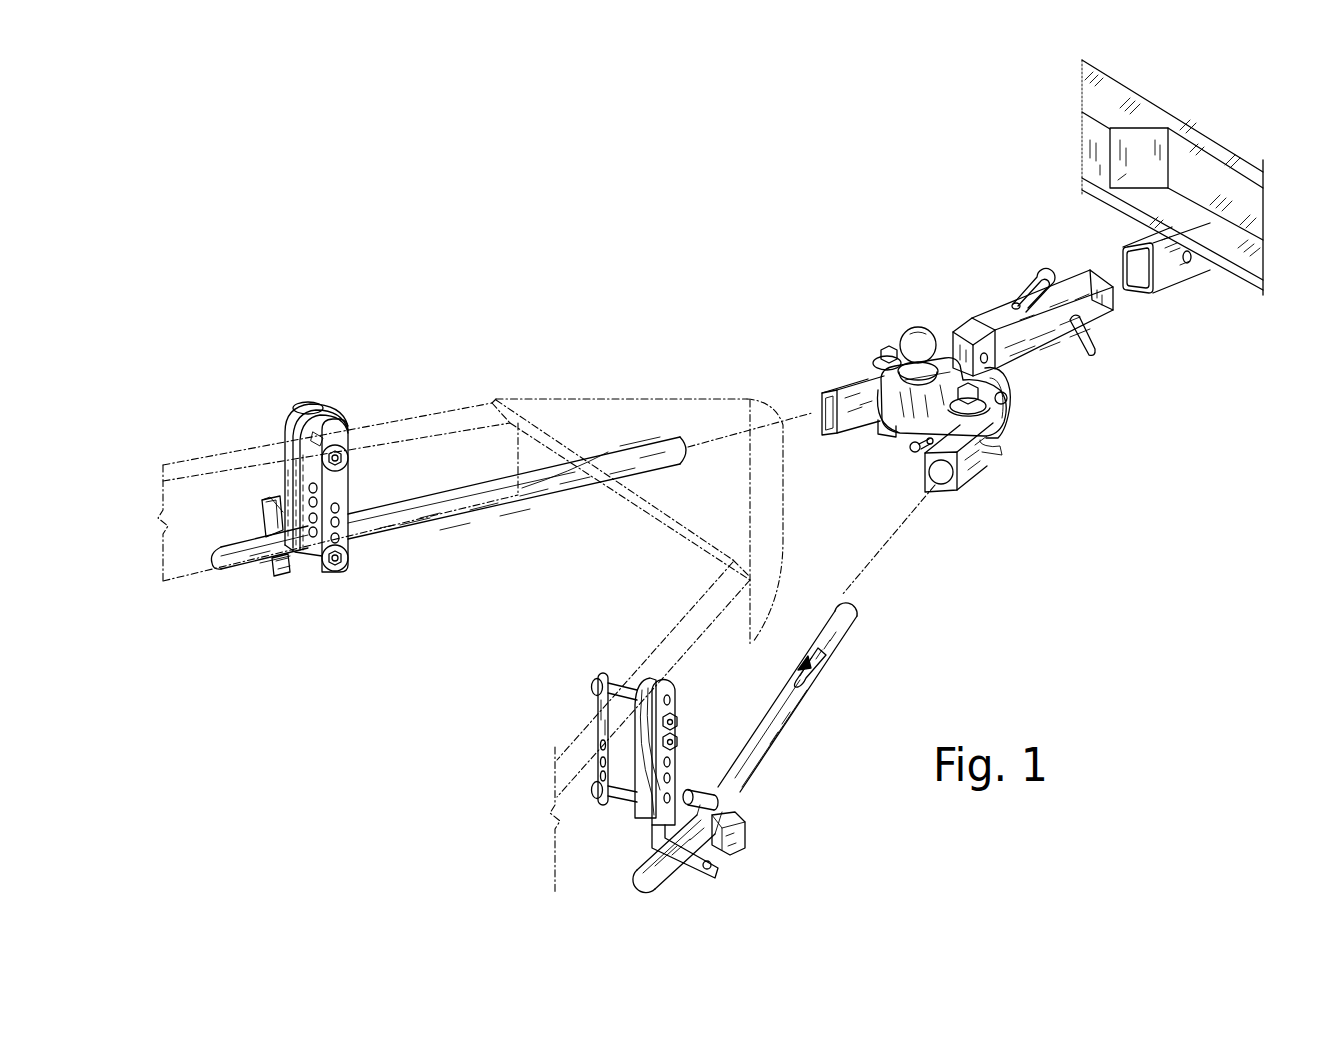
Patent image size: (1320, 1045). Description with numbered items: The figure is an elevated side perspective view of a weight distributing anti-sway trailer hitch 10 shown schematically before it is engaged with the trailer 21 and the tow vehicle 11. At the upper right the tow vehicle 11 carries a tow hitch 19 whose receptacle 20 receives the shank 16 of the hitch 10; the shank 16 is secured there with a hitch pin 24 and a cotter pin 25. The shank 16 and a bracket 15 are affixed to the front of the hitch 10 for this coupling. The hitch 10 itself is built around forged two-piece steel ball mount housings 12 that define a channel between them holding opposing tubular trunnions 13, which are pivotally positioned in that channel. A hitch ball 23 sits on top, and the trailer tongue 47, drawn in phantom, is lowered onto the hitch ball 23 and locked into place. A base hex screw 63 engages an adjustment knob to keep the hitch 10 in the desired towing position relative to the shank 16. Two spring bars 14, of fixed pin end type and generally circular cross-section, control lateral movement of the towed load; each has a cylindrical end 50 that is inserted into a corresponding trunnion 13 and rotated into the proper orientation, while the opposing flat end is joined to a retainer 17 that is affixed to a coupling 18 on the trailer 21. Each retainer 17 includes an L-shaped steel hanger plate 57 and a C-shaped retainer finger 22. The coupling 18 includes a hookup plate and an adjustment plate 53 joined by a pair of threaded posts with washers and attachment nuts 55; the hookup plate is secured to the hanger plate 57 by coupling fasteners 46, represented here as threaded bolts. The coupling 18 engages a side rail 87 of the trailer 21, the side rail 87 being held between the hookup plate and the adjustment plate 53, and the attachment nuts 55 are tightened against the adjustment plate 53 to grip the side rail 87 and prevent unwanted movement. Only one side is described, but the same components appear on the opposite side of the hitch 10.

The anti-sway trailer hitch 10 is at (761, 260).
The tow vehicle 11 is at (1152, 112).
The ball mount housing 12 is at (880, 424).
The trunnions 13 is at (849, 385).
The spring bar 14 is at (826, 641).
The bracket 15 is at (1011, 385).
The shank 16 is at (1006, 322).
The retainer 17 is at (746, 843).
The coupling 18 is at (337, 412).
The tow hitch 19 is at (1172, 277).
The receptacle 20 is at (1132, 262).
The trailer 21 is at (525, 399).
The C-shaped retainer finger 22 is at (693, 792).
The hitch ball 23 is at (918, 327).
The hitch pin 24 is at (1090, 356).
The cotter pin 25 is at (1040, 273).
The coupling fasteners 46 is at (673, 715).
The trailer tongue 47 is at (748, 404).
The cylindrical end 50 is at (841, 604).
The adjustment plate 53 is at (612, 683).
The attachment nuts 55 is at (349, 562).
The hanger plate 57 is at (638, 880).
The base hex screw 63 is at (912, 451).
The side rail 87 is at (221, 462).